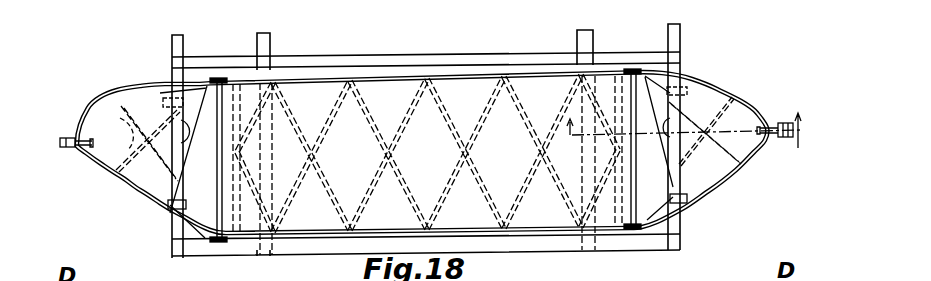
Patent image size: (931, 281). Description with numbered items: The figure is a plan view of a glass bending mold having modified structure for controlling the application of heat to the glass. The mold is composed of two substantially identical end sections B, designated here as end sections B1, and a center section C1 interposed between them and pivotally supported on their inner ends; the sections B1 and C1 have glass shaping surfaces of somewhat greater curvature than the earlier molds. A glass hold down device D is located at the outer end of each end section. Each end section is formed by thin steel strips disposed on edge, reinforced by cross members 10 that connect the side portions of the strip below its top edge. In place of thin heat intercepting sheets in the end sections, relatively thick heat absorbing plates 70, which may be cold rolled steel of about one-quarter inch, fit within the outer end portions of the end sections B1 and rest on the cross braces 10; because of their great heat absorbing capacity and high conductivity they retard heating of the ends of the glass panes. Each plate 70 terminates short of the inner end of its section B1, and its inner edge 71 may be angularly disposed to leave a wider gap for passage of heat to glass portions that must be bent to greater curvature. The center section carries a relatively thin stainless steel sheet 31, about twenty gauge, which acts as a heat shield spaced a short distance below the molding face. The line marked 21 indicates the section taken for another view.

The glass hold down device D is at (70, 135).
The cross members 10 is at (114, 106).
The inner edge 71 is at (183, 119).
The end section B1 is at (108, 196).
The end section B is at (742, 189).
The heat absorbing plate 70 is at (151, 182).
The center section C1 is at (439, 80).
The intercepting plate 31 is at (527, 86).
The section line 21 is at (681, 143).